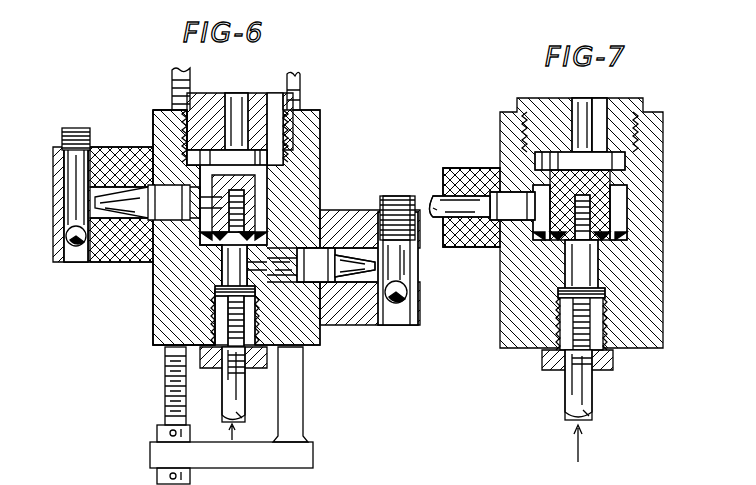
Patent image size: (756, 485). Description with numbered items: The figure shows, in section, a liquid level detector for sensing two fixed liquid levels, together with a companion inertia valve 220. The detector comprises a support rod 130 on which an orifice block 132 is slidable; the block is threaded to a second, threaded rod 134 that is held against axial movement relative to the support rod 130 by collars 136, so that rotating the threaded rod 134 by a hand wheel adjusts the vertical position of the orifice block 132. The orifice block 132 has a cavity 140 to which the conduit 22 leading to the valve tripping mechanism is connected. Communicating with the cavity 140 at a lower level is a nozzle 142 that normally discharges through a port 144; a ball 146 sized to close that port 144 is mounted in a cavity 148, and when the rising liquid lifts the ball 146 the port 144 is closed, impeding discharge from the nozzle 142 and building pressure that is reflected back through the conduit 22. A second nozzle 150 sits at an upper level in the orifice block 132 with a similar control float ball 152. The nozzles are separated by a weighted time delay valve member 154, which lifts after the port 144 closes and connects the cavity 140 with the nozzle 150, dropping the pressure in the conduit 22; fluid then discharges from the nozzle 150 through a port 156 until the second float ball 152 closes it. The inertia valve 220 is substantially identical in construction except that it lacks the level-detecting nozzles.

In FIG. 6, the conduit 22 is at (222, 392).
In FIG. 6, the support rod 130 is at (294, 395).
In FIG. 6, the orifice block 132 is at (310, 184).
In FIG. 6, the threaded rod 134 is at (165, 393).
In FIG. 6, the collars 136 is at (158, 475).
In FIG. 6, the cavity 140 is at (213, 265).
In FIG. 6, the nozzle 142 is at (336, 283).
In FIG. 6, the port 144 is at (411, 272).
In FIG. 6, the ball 146 is at (392, 304).
In FIG. 6, the cavity 148 is at (400, 258).
In FIG. 6, the second nozzle 150 is at (122, 222).
In FIG. 6, the control float ball 152 is at (70, 248).
In FIG. 6, the time delay valve member 154 is at (258, 211).
In FIG. 6, the port 156 is at (58, 205).
In FIG. 7, the inertia valve 220 is at (667, 156).